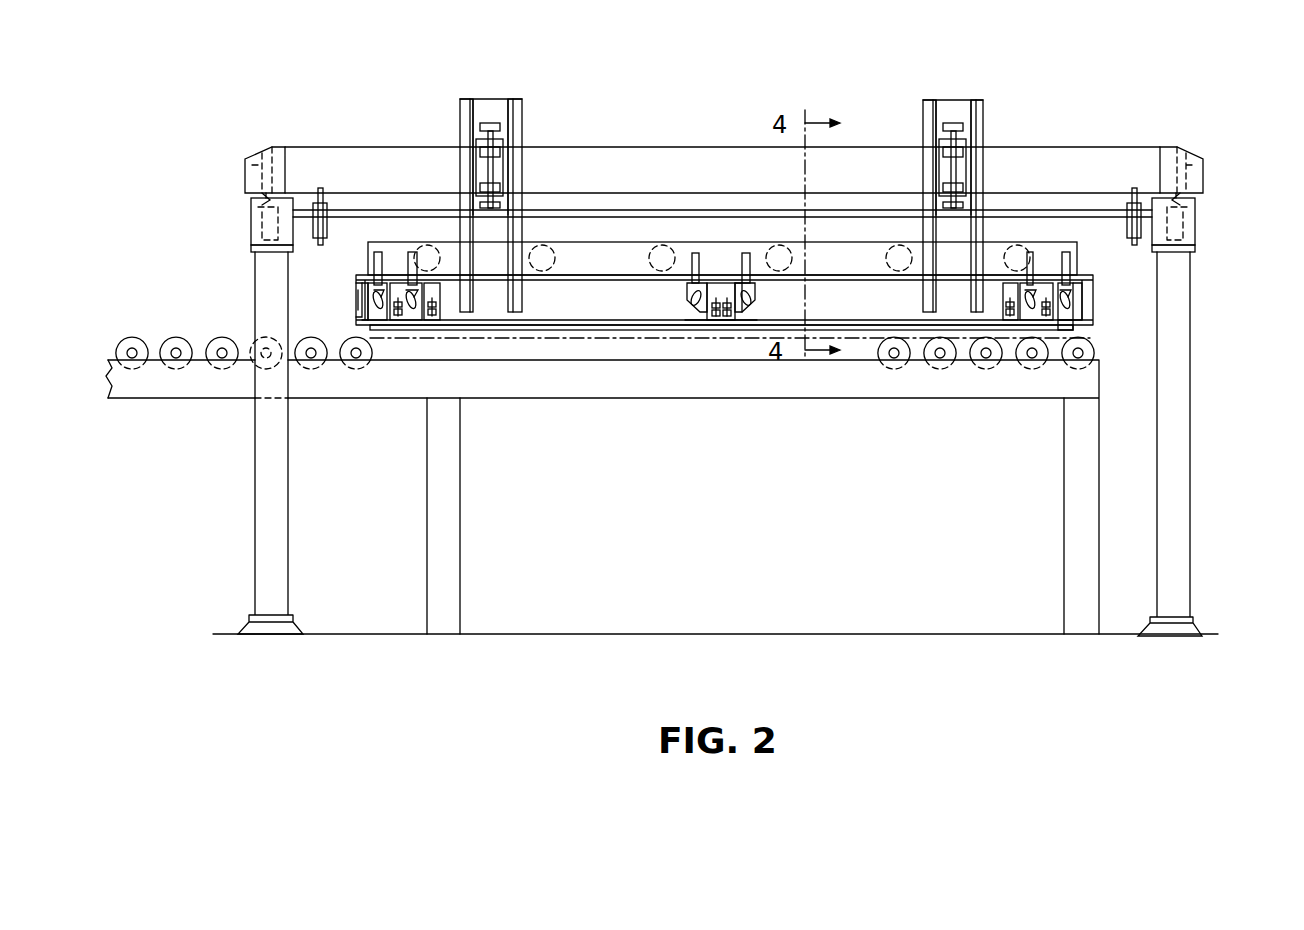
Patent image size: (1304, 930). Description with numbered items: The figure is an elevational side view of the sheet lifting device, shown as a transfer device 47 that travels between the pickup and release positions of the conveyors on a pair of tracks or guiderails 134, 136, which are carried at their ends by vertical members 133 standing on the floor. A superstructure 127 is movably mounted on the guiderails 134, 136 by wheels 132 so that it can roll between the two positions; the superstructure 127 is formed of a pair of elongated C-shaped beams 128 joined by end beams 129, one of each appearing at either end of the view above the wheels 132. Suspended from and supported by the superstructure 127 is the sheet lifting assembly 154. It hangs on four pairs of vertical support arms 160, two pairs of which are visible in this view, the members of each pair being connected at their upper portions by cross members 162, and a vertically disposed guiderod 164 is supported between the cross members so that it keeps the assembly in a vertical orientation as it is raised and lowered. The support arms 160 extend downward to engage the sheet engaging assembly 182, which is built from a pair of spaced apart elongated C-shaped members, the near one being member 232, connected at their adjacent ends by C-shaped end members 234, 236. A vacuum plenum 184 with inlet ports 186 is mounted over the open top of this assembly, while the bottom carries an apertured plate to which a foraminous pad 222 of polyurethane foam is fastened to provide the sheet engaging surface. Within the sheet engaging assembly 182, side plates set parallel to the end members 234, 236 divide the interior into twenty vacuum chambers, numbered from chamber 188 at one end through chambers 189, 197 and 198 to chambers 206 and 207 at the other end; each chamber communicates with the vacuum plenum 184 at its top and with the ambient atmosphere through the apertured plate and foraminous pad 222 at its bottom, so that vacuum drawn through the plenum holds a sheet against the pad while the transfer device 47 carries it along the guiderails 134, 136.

The transfer device 47 is at (1136, 116).
The superstructure 127 is at (1044, 140).
The C-shaped beams 128 is at (638, 186).
The end beams 129 is at (280, 144).
The wheels 132 is at (266, 168).
The vertical members 133 is at (263, 520).
The guiderail 134 is at (258, 208).
The guiderail 136 is at (1195, 207).
The sheet lifting assembly 154 is at (717, 113).
The vertical support arms 160 is at (466, 108).
The cross members 162 is at (488, 102).
The guiderod 164 is at (492, 165).
The sheet engaging assembly 182 is at (1120, 287).
The vacuum plenum 184 is at (637, 269).
The inlet ports 186 is at (648, 242).
The vacuum chamber 188 is at (360, 318).
The vacuum chamber 189 is at (398, 285).
The vacuum chamber 197 is at (717, 295).
The vacuum chamber 198 is at (729, 282).
The vacuum chamber 206 is at (1042, 293).
The vacuum chamber 207 is at (1058, 330).
The foraminous pad 222 is at (1068, 333).
The C-shaped member 232 is at (837, 315).
The C-shaped end member 234 is at (367, 303).
The C-shaped end member 236 is at (1082, 312).